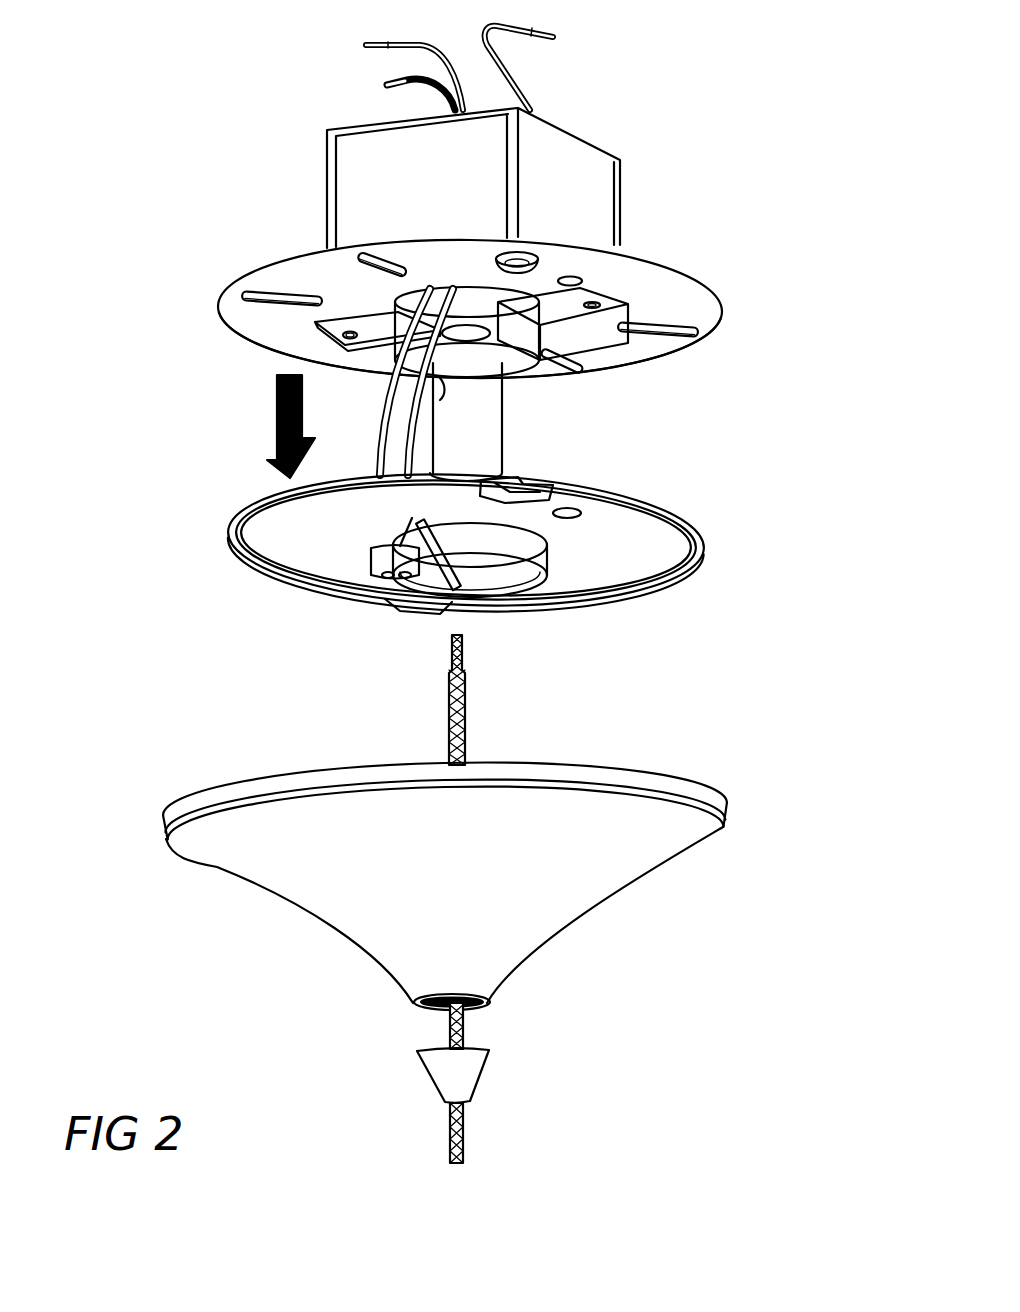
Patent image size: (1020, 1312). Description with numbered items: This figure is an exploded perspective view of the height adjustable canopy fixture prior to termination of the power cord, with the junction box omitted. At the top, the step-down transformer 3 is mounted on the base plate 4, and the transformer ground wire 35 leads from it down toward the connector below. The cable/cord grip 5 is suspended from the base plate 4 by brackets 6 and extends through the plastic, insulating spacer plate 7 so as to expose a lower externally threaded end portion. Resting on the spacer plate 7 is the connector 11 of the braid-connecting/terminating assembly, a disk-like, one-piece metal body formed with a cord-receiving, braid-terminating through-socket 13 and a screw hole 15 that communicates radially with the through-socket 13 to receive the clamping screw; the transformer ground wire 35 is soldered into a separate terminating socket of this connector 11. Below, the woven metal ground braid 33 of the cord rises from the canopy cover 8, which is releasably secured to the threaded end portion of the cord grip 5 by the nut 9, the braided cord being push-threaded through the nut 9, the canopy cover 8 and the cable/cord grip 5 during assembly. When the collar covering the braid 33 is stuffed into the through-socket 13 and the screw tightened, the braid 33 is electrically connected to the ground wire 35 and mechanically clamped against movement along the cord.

The step-down transformer 3 is at (593, 210).
The base plate 4 is at (667, 298).
The cable/cord grip 5 is at (485, 430).
The brackets 6 is at (633, 362).
The spacer plate 7 is at (702, 545).
The canopy cover 8 is at (687, 815).
The nut 9 is at (467, 1078).
The connector 11 is at (383, 580).
The through-socket 13 is at (385, 585).
The screw hole 15 is at (370, 558).
The woven metal ground braid 33 is at (466, 728).
The transformer ground wire 35 is at (407, 520).